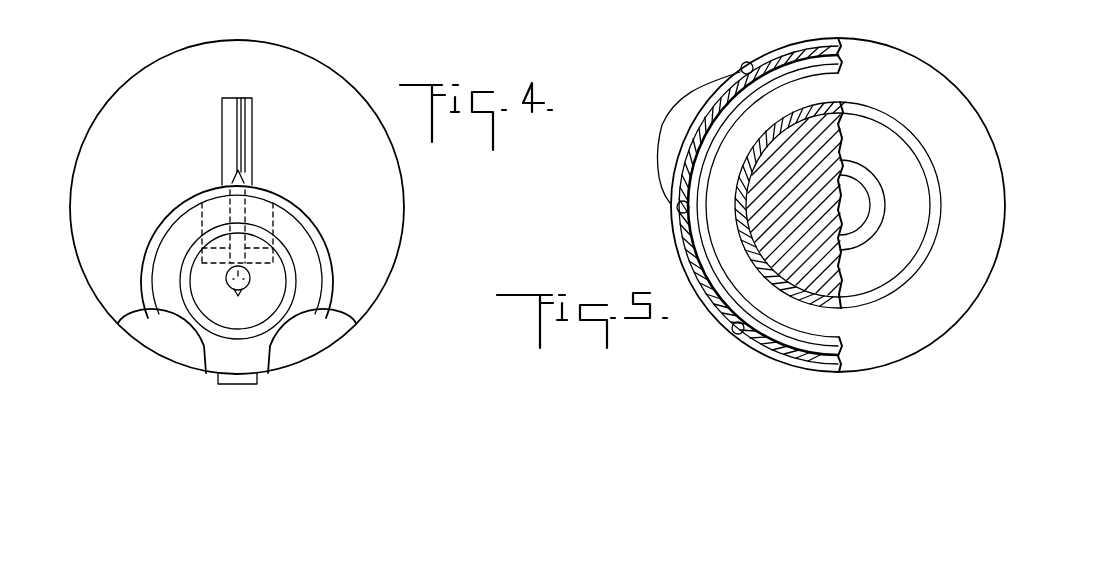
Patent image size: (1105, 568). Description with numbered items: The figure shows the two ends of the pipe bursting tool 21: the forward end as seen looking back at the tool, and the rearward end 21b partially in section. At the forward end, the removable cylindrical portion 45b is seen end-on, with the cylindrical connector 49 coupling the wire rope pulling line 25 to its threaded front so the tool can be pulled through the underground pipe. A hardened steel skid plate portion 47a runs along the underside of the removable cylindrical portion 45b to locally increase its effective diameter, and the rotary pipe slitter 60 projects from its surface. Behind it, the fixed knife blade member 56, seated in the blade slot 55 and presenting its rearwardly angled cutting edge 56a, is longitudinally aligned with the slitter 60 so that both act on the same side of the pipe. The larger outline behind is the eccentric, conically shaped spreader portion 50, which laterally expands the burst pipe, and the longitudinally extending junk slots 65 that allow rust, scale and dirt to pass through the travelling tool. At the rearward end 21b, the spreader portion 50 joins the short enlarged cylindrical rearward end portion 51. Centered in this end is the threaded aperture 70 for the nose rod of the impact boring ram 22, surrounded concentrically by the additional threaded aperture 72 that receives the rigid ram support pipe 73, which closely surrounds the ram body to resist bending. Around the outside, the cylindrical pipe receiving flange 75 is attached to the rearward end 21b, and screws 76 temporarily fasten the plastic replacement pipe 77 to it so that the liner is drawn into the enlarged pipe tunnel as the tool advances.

In FIG. 4, the pipe bursting tool 21 is at (66, 148).
In FIG. 5, the pipe bursting tool 21 is at (1020, 166).
In FIG. 4, the spreader portion 50 is at (404, 180).
In FIG. 4, the blade slot 55 is at (222, 102).
In FIG. 4, the cutting edge 56a is at (237, 126).
In FIG. 4, the knife blade member 56 is at (228, 152).
In FIG. 4, the rotary pipe slitter 60 is at (240, 195).
In FIG. 4, the removable cylindrical portion 45b is at (325, 247).
In FIG. 4, the cylindrical connector 49 is at (290, 267).
In FIG. 4, the wire rope pulling line 25 is at (227, 278).
In FIG. 4, the junk slots 65 is at (140, 330).
In FIG. 4, the skid plate portion 47a is at (258, 380).
In FIG. 5, the cylindrical rearward end portion 51 is at (1006, 228).
In FIG. 5, the rearward end 21b is at (812, 365).
In FIG. 5, the pipe receiving flange 75 is at (773, 78).
In FIG. 5, the plastic replacement pipe 77 is at (688, 240).
In FIG. 5, the screws 76 is at (740, 73).
In FIG. 5, the ram support pipe 73 is at (752, 262).
In FIG. 5, the impact boring ram 22 is at (810, 272).
In FIG. 5, the threaded aperture 70 is at (876, 210).
In FIG. 5, the threaded aperture 72 is at (932, 178).